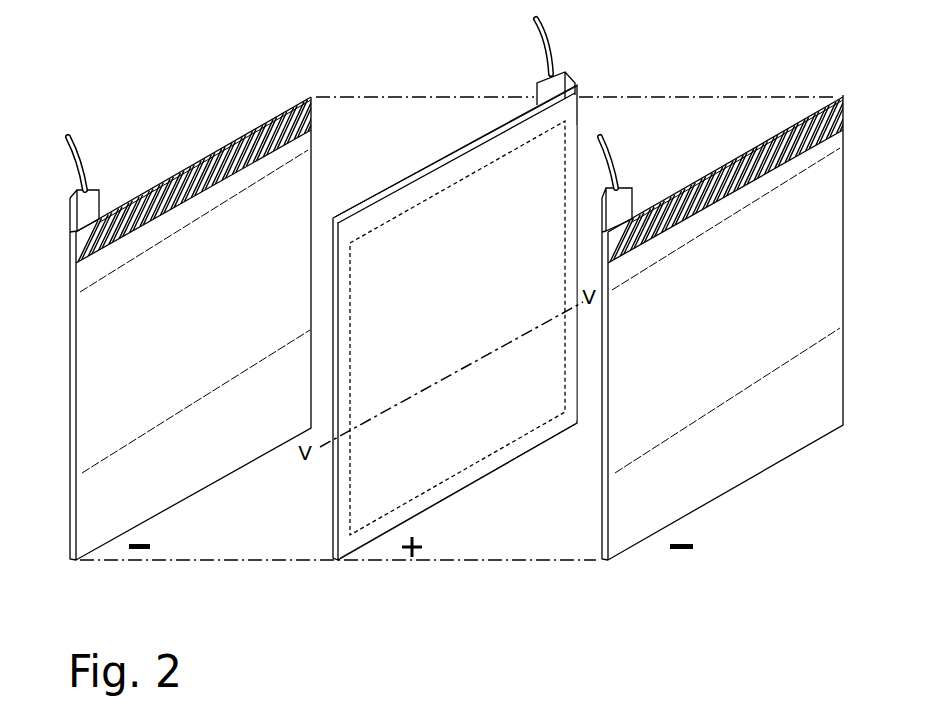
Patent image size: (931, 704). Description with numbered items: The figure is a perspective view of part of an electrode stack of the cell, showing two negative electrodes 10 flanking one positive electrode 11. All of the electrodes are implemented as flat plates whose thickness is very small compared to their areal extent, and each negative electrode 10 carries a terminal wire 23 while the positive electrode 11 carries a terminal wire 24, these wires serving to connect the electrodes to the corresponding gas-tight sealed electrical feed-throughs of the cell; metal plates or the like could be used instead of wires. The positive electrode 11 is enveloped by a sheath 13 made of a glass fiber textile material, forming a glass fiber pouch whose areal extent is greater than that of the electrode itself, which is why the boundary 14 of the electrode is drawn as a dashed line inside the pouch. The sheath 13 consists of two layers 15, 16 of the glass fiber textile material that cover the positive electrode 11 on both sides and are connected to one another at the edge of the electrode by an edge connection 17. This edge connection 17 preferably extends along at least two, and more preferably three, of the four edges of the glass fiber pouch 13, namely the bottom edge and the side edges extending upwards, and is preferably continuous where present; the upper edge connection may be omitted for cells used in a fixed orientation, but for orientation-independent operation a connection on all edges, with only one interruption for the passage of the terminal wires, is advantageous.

The negative electrode 10 is at (101, 407).
The positive electrode 11 is at (448, 151).
The sheath 13 is at (378, 492).
The boundary 14 is at (350, 510).
The layer 15 is at (419, 458).
The layer 16 is at (378, 187).
The edge connection 17 is at (480, 472).
The terminal wire 23 is at (98, 178).
The terminal wire 24 is at (559, 44).